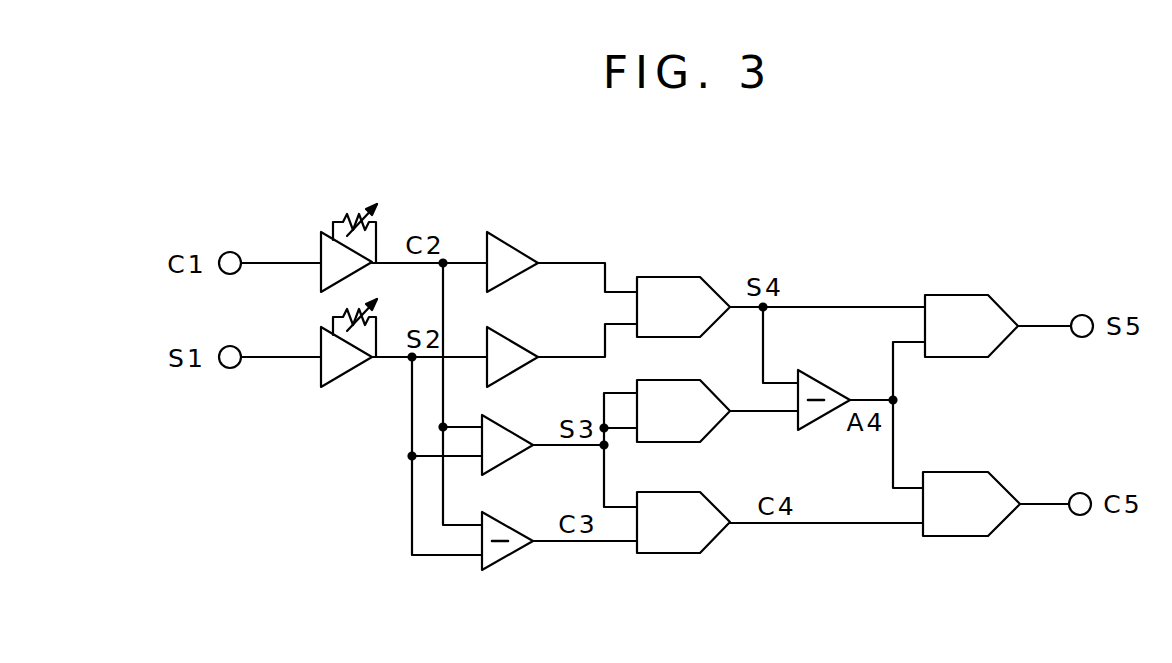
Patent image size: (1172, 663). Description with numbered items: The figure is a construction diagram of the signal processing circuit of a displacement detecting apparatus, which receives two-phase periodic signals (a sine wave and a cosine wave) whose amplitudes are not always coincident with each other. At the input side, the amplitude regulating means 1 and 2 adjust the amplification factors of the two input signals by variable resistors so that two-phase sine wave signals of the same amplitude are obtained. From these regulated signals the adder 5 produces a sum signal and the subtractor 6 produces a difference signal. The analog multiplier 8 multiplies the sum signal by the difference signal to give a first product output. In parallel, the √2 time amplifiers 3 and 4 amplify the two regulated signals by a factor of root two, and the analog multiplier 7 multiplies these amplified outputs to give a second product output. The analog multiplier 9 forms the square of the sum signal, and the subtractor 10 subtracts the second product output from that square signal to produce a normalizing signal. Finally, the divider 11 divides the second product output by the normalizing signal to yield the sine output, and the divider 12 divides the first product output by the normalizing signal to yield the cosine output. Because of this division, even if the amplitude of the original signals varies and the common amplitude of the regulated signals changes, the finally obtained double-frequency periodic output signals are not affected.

The amplitude regulating means 1 is at (318, 253).
The amplitude regulating means 2 is at (322, 372).
The √2 time amplifier 3 is at (511, 246).
The √2 time amplifier 4 is at (512, 341).
The adder 5 is at (517, 434).
The subtractor 6 is at (514, 528).
The analog multiplier 7 is at (678, 277).
The analog multiplier 8 is at (662, 492).
The analog multiplier 9 is at (667, 380).
The subtractor 10 is at (818, 382).
The divider 11 is at (968, 295).
The divider 12 is at (965, 472).